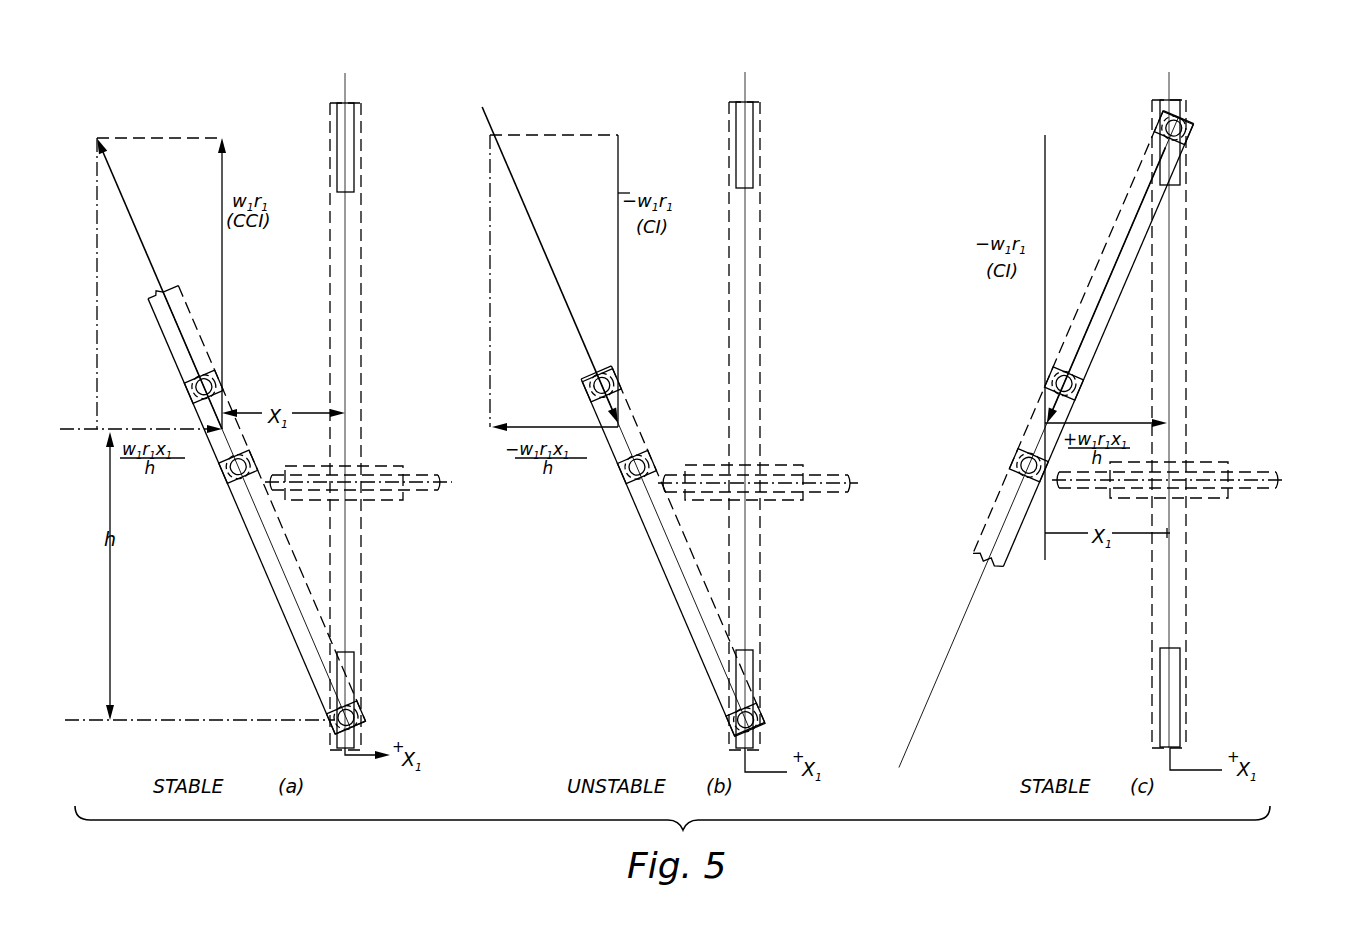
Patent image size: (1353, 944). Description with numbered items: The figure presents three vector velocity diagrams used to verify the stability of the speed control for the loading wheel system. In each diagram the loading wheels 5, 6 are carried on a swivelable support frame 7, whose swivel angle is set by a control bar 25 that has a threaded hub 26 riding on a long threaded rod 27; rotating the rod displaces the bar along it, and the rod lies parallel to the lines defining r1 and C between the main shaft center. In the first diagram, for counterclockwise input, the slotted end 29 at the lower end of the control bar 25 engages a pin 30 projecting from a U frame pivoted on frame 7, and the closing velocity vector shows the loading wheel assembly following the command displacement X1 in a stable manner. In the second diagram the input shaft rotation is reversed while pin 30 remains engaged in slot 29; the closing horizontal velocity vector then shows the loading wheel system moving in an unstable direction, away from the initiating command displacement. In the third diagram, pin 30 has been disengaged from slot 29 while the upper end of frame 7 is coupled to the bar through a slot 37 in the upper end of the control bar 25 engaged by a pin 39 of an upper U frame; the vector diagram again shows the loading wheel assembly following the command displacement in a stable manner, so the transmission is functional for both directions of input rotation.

The loading wheel 5 is at (226, 471).
The loading wheel 6 is at (634, 385).
The swivelable support 7 is at (297, 546).
The control bar 25 is at (362, 552).
The threaded hub 26 is at (400, 466).
The threaded rod 27 is at (430, 492).
The slotted end 29 is at (355, 657).
The pin 30 is at (355, 713).
The slot 37 is at (354, 132).
The pin 39 is at (1183, 118).